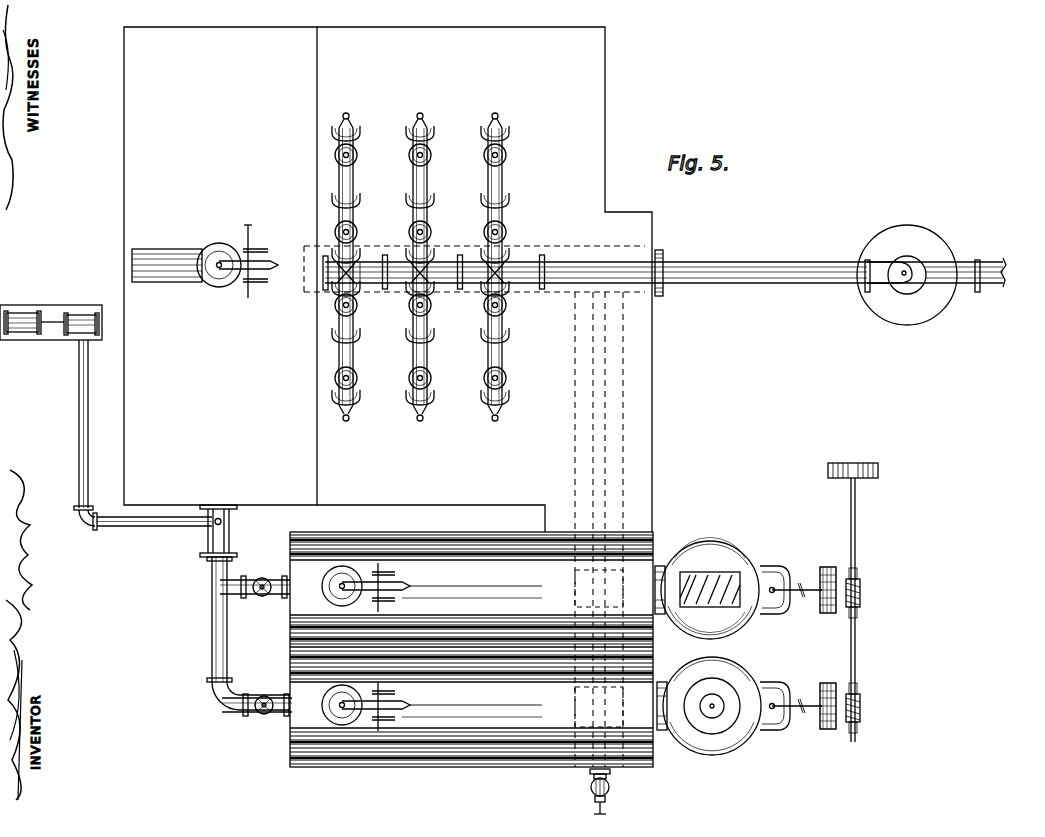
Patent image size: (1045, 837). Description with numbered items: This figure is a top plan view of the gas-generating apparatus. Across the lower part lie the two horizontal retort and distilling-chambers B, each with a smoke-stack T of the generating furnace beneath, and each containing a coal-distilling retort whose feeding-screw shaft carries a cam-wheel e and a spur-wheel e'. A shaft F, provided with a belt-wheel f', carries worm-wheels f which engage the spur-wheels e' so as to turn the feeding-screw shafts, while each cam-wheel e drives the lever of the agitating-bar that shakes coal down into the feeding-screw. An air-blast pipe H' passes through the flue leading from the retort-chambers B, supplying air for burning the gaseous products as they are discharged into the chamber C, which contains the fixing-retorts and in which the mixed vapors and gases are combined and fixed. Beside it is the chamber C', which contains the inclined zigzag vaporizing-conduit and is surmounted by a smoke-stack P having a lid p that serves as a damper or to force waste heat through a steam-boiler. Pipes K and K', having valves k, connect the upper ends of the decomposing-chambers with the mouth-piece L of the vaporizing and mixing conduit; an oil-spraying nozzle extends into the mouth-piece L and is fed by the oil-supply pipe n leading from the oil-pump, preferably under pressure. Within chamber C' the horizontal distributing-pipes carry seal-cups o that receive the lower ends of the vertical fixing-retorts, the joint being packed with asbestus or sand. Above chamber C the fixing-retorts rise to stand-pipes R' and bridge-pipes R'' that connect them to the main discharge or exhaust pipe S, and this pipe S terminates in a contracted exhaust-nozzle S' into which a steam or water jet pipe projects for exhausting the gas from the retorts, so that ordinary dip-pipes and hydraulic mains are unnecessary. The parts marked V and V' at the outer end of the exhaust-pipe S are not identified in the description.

The vaporizing-conduit chamber C' is at (220, 266).
The fixing-retort chamber C is at (484, 279).
The smoke-stack P is at (205, 267).
The lid p is at (212, 252).
The main exhaust pipe S is at (664, 266).
The exhaust-nozzle S' is at (376, 255).
The pulley V is at (907, 275).
The shaft end V' is at (987, 283).
The stand pipe R' is at (383, 267).
The bridge pipe R'' is at (483, 267).
The seal-cup o is at (72, 310).
The oil-supply pipe n is at (143, 442).
The mouth-piece L is at (224, 531).
The gas pipe K' is at (248, 619).
The gas pipe K is at (249, 690).
The valve k is at (262, 646).
The retort and distilling-chamber B is at (471, 649).
The smoke-stack T is at (421, 647).
The air-blast pipe H' is at (612, 791).
The cam-wheel e is at (745, 646).
The spur-wheel e' is at (849, 653).
The shaft F is at (850, 520).
The belt-wheel f' is at (865, 467).
The worm-wheel f is at (864, 649).